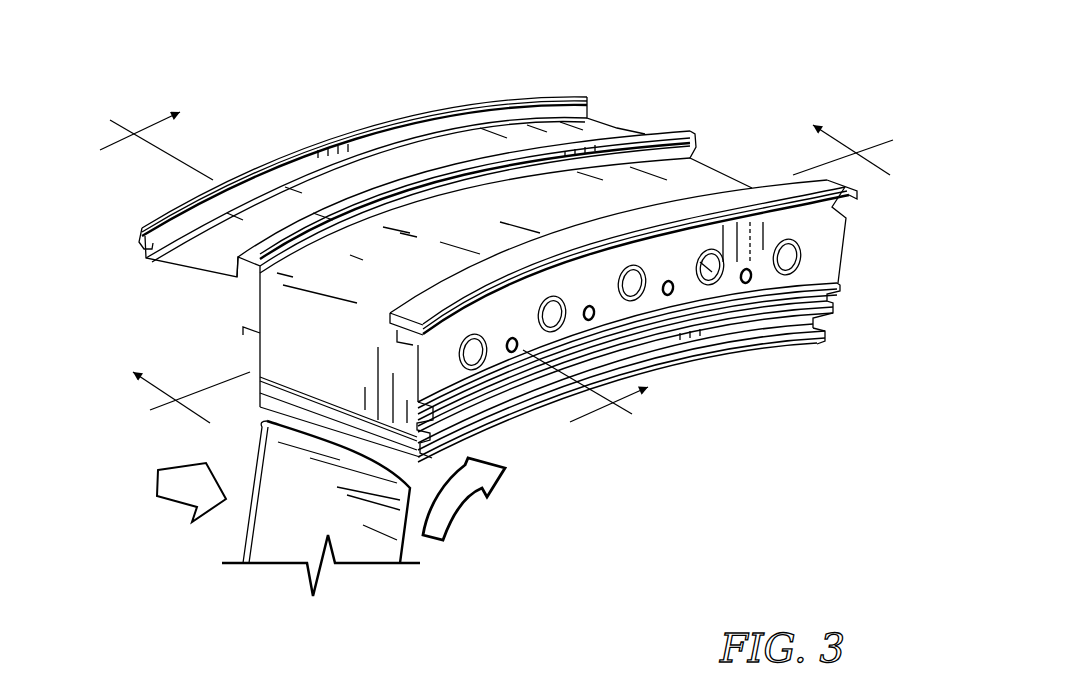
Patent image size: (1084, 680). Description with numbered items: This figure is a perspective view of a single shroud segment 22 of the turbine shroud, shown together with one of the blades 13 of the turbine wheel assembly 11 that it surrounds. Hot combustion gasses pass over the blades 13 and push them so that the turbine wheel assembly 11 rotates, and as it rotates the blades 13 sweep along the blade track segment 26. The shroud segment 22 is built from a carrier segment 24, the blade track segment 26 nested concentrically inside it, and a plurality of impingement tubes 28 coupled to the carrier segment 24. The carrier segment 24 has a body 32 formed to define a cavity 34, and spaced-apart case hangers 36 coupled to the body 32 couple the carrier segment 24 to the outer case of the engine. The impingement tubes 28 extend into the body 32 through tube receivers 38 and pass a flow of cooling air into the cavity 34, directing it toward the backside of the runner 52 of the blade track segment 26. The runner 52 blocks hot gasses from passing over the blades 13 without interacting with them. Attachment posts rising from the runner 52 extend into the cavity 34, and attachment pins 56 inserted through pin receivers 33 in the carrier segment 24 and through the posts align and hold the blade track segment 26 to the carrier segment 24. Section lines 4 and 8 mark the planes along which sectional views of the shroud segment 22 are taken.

The section line 4- 4 is at (366, 284).
The section line 8- 8 is at (513, 291).
The turbine wheel assembly 11 is at (153, 530).
The blades 13 is at (277, 522).
The shroud segment 22 is at (703, 62).
The carrier segment 24 is at (683, 180).
The blade track segment 26 is at (832, 325).
The impingement tubes 28 is at (667, 272).
The body 32 is at (290, 353).
The pin receivers 33 is at (557, 297).
The cavity 34 is at (731, 222).
The case hangers 36 is at (388, 330).
The tube receivers 38 is at (513, 338).
The runner 52 is at (777, 333).
The attachment pins 56 is at (705, 264).